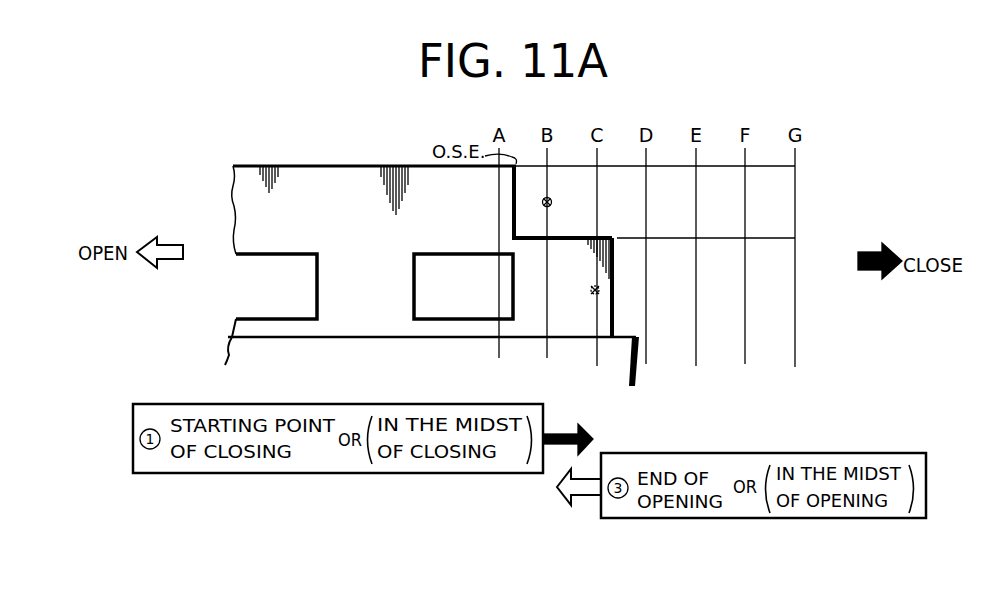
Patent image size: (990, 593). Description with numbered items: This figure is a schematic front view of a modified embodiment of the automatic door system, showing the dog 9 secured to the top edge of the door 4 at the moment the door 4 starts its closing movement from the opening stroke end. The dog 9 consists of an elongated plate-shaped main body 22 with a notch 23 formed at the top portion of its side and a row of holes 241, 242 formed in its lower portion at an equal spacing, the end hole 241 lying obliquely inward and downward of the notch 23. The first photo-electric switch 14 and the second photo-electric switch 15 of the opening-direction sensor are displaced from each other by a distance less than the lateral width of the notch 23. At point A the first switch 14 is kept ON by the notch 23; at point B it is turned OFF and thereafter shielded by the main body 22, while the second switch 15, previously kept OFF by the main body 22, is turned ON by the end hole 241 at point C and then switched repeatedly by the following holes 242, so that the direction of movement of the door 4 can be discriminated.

The door 4 is at (627, 349).
The dog 9 is at (396, 162).
The first photo-electric switch 14 is at (552, 202).
The second photo-electric switch 15 is at (604, 287).
The main body 22 is at (353, 166).
The notch 23 is at (513, 186).
The hole 241 is at (433, 254).
The hole 242 is at (266, 251).